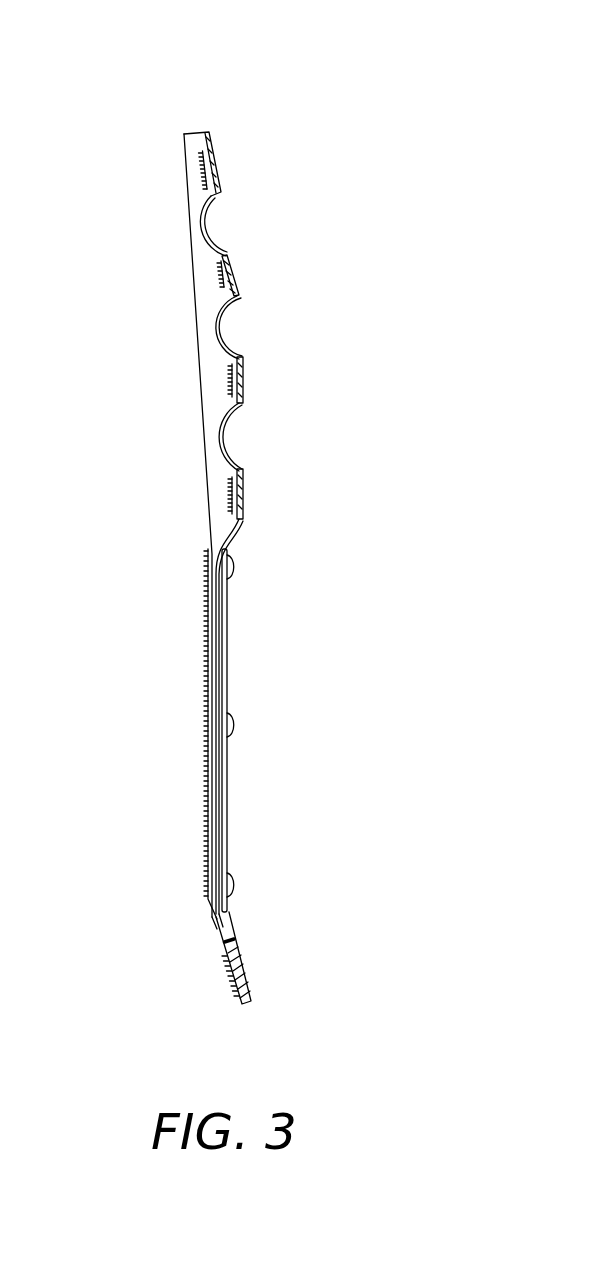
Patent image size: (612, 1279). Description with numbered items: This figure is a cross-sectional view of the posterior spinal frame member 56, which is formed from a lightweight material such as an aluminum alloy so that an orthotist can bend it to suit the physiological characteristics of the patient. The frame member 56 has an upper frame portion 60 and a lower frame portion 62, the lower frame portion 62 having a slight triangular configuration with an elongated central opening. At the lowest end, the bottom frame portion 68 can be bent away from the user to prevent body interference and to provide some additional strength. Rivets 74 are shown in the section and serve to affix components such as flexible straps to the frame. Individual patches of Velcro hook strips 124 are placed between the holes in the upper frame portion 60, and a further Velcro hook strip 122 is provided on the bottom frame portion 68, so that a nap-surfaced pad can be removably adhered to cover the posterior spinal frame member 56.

The posterior spinal frame member 56 is at (193, 151).
The upper frame portion 60 is at (207, 250).
The Velcro hook strips 124 is at (220, 487).
The rivets 74 is at (240, 563).
The lower frame portion 62 is at (233, 665).
The bottom frame portion 68 is at (233, 930).
The Velcro hook strip 122 is at (215, 973).